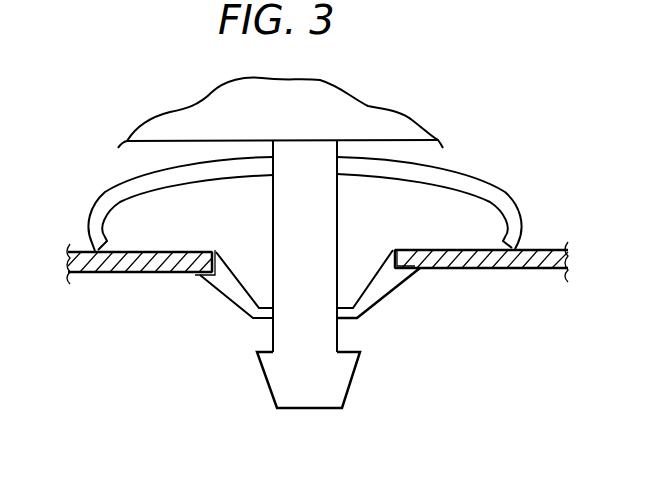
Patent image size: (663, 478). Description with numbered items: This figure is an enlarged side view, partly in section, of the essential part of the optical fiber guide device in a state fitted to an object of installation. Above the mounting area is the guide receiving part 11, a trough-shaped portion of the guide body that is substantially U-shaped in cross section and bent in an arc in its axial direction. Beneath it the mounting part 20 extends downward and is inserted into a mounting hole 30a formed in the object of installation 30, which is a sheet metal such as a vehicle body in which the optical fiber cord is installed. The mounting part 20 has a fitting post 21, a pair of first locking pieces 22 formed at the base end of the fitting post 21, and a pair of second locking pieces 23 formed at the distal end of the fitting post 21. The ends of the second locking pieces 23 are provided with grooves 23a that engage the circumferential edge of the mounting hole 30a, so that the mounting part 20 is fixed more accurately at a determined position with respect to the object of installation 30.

The guide receiving part 11 is at (373, 139).
The mounting part 20 is at (302, 410).
The fitting post 21 is at (273, 212).
The first locking pieces 22 is at (498, 185).
The second locking pieces 23 is at (230, 303).
The grooves 23a is at (206, 266).
The object of installation 30 is at (545, 249).
The mounting hole 30a is at (388, 249).